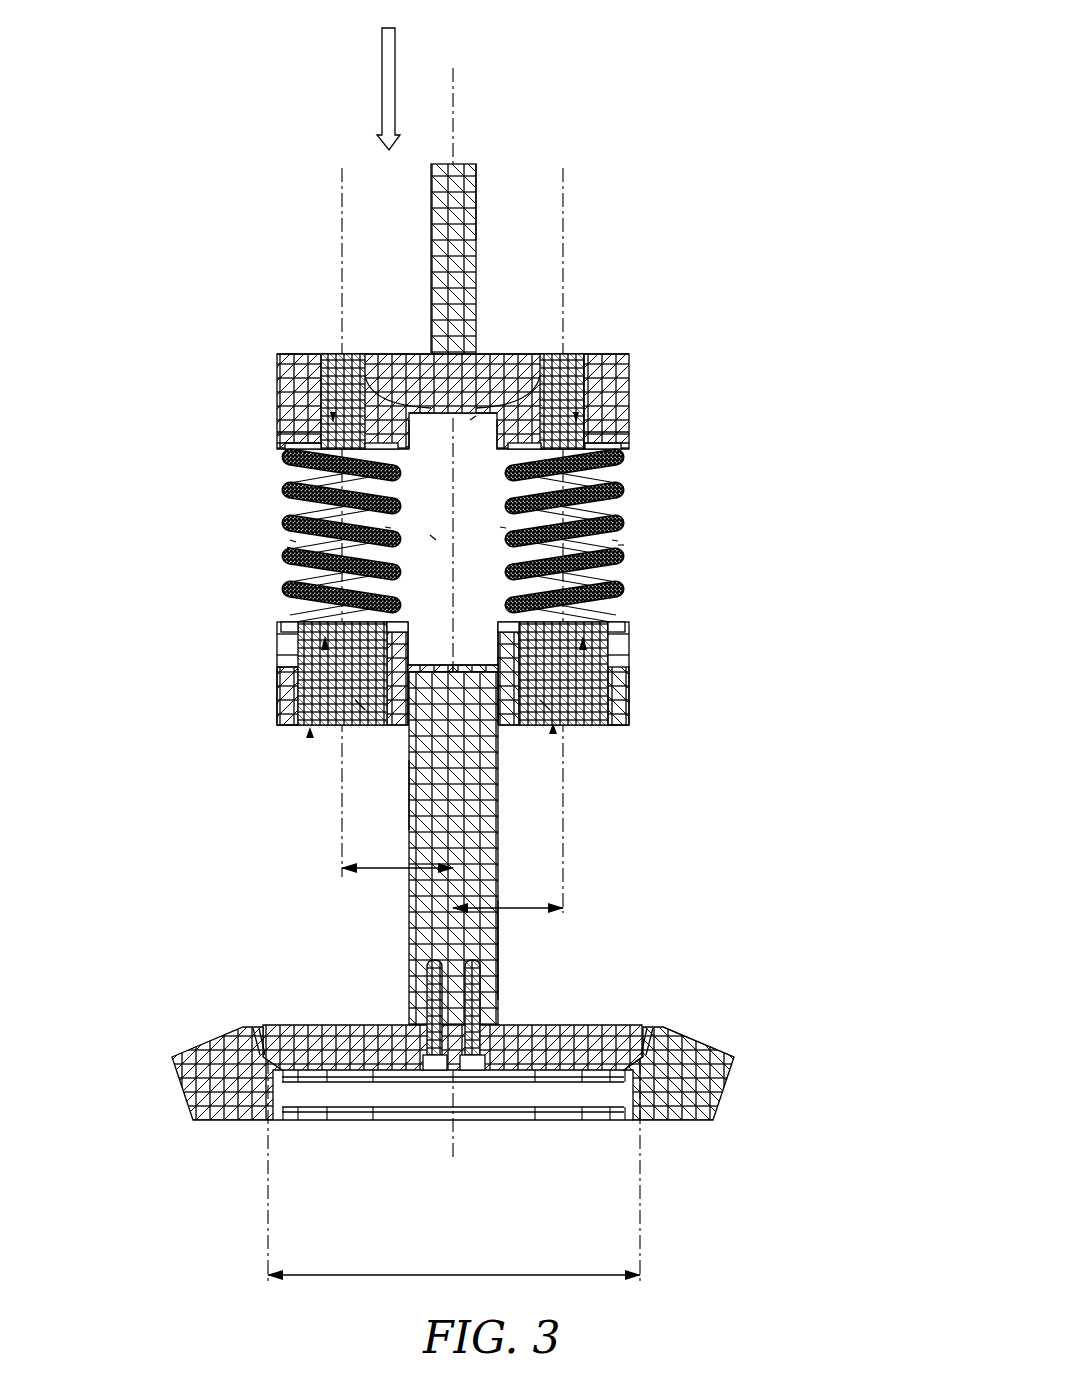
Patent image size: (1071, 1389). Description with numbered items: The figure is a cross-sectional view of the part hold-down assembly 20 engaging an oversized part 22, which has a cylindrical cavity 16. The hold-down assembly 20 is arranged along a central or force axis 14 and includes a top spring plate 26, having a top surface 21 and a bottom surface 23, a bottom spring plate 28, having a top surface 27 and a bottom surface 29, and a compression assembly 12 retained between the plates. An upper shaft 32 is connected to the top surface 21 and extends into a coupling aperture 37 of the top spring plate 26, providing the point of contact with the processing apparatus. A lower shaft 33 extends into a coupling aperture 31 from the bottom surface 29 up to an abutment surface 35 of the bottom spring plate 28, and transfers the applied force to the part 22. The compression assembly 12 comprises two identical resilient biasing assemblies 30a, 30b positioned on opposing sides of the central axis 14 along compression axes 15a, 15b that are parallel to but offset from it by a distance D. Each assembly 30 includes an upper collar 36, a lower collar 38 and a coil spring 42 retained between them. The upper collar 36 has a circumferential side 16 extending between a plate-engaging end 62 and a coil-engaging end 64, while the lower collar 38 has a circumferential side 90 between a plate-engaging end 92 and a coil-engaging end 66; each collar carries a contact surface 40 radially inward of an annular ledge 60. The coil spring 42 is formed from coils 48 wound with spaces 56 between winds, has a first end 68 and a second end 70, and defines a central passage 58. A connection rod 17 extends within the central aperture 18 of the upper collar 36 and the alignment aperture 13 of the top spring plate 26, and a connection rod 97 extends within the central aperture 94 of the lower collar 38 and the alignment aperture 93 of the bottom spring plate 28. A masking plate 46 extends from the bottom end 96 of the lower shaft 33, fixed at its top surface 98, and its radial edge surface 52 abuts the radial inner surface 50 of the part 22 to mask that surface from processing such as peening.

The compression assembly 12 is at (130, 498).
The alignment aperture 13 is at (333, 362).
The central axis 14 is at (455, 80).
The compression axis 15a is at (342, 172).
The compression axis 15b is at (563, 172).
The circumferential side 16 is at (410, 425).
The connection rod 17 is at (462, 400).
The central aperture 18 is at (295, 505).
The part hold-down assembly 20 is at (143, 118).
The top surface 21 is at (620, 365).
The oversized part 22 is at (195, 1065).
The bottom surface 23 is at (475, 415).
The top spring plate 26 is at (627, 377).
The top surface 27 is at (420, 663).
The bottom spring plate 28 is at (630, 690).
The bottom surface 29 is at (503, 728).
The shaft 30 is at (432, 372).
The resilient biasing assembly 30a is at (268, 487).
The resilient biasing assembly 30b is at (670, 449).
The coupling aperture 31 is at (502, 828).
The upper shaft 32 is at (440, 285).
The lower shaft 33 is at (483, 942).
The abutment surface 35 is at (409, 795).
The upper collar 36 is at (280, 432).
The coupling aperture 37 is at (462, 235).
The lower collar 38 is at (285, 665).
The contact surface 40 is at (300, 385).
The coil spring 42 is at (297, 493).
The masking plate 46 is at (590, 1035).
The coil 48 is at (292, 540).
The radial inner surface 50 is at (260, 1053).
The radial edge surface 52 is at (662, 1048).
The space 56 is at (433, 537).
The central passage 58 is at (293, 548).
The annular ledge 60 is at (277, 442).
The plate-engaging end 62 is at (300, 395).
The coil-engaging end 64 is at (437, 547).
The coil-engaging end 66 is at (285, 620).
The first end 68 is at (305, 440).
The second end 70 is at (279, 657).
The circumferential side 90 is at (278, 648).
The plate-engaging end 92 is at (283, 712).
The alignment aperture 93 is at (310, 738).
The central aperture 94 is at (325, 650).
The bottom end 96 is at (423, 1027).
The connection rod 97 is at (362, 705).
The top surface 98 is at (482, 1025).